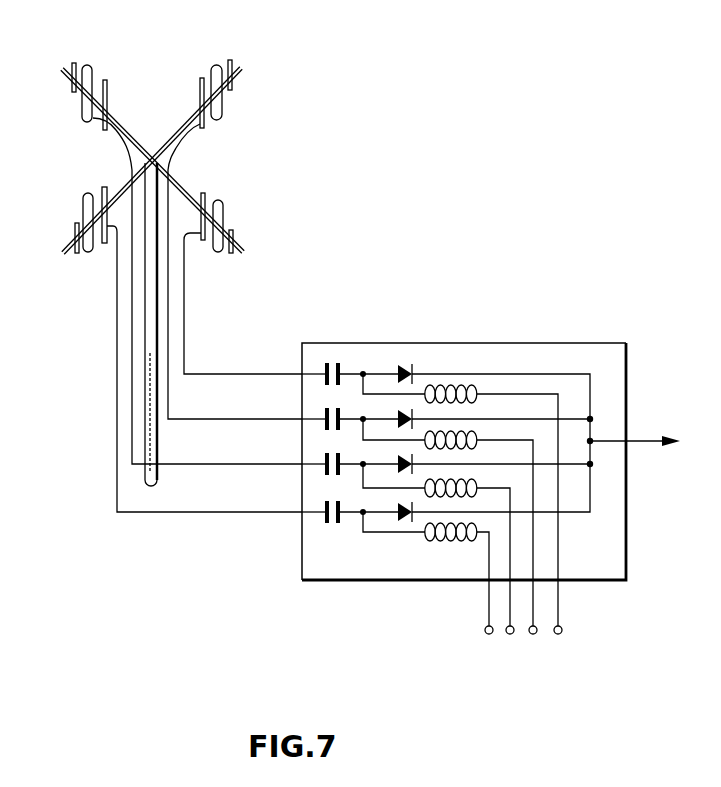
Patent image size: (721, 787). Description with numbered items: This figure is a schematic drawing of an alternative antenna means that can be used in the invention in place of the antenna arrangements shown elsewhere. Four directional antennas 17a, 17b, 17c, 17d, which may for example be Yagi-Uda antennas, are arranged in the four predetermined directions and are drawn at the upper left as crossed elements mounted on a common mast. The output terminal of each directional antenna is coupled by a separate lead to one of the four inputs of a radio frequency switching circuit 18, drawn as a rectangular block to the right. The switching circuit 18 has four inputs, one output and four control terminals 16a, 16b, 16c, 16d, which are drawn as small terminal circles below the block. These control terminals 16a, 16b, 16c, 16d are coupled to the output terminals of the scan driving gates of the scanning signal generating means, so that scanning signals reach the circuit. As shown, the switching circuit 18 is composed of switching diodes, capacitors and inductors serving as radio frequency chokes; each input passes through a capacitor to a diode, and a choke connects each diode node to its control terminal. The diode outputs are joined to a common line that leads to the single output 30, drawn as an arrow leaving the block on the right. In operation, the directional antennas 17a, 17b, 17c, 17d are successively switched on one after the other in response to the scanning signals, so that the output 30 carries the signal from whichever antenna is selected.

The directional antenna 17a is at (212, 64).
The directional antenna 17b is at (223, 203).
The directional antenna 17c is at (84, 194).
The directional antenna 17d is at (92, 65).
The radio frequency switching circuit 18 is at (488, 344).
The combined output 30 is at (665, 440).
The control terminal 16a is at (561, 634).
The control terminal 16b is at (536, 634).
The control terminal 16c is at (508, 634).
The control terminal 16d is at (486, 634).